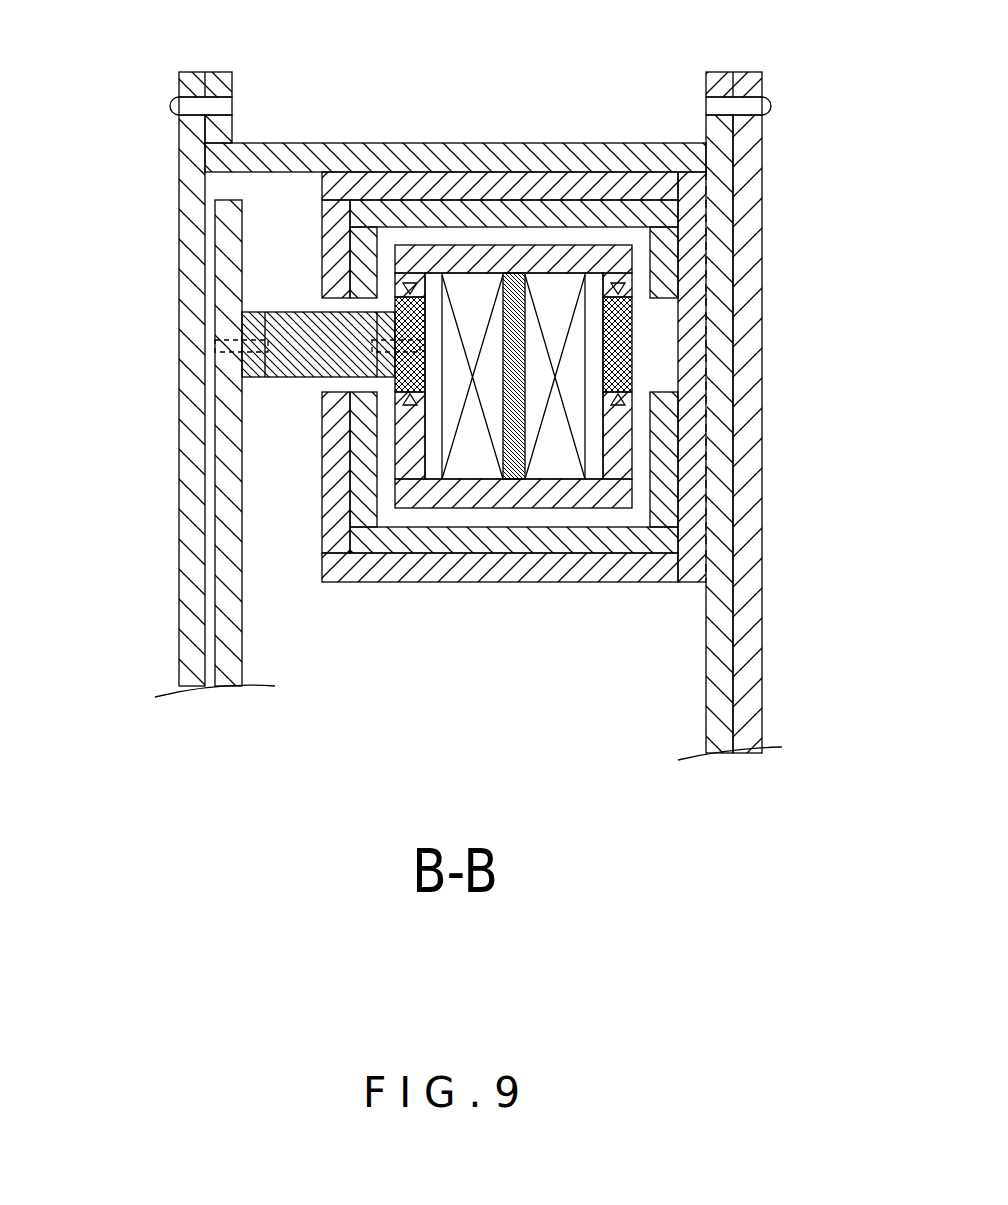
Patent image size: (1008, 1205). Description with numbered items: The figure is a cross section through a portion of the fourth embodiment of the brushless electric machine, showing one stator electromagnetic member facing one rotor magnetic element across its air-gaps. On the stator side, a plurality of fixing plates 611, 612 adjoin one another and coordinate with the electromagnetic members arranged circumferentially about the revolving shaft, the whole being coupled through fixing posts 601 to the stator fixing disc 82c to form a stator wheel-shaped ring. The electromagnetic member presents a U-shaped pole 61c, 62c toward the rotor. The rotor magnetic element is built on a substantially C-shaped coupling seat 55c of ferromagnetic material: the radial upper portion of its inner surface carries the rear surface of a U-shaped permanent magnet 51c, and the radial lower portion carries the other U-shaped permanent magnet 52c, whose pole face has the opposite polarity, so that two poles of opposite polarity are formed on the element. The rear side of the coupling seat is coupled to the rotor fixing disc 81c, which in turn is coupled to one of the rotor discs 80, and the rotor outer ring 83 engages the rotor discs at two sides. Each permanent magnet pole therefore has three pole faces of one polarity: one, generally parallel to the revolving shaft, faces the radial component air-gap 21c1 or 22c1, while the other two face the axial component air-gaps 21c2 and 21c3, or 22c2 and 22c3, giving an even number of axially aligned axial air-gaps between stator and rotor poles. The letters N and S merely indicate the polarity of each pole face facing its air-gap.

The rotor disc 80 is at (748, 192).
The rotor fixing disc 81c is at (722, 243).
The stator fixing disc 82c is at (230, 462).
The rotor outer ring 83 is at (345, 155).
The radial component air-gap 21c1 is at (588, 235).
The axial component air-gap 21c2 is at (378, 267).
The axial component air-gap 21c3 is at (645, 280).
The radial component air-gap 22c1 is at (528, 520).
The axial component air-gap 22c2 is at (387, 463).
The axial component air-gap 22c3 is at (640, 482).
The U-shaped permanent magnet 51c is at (507, 203).
The U-shaped permanent magnet 52c is at (570, 548).
The C-shaped coupling seat 55c is at (563, 180).
The U-shaped pole 61c is at (480, 253).
The U-shaped pole 62c is at (445, 508).
The fixing post 601 is at (322, 342).
The fixing plate 611 is at (630, 330).
The fixing plate 612 is at (405, 378).